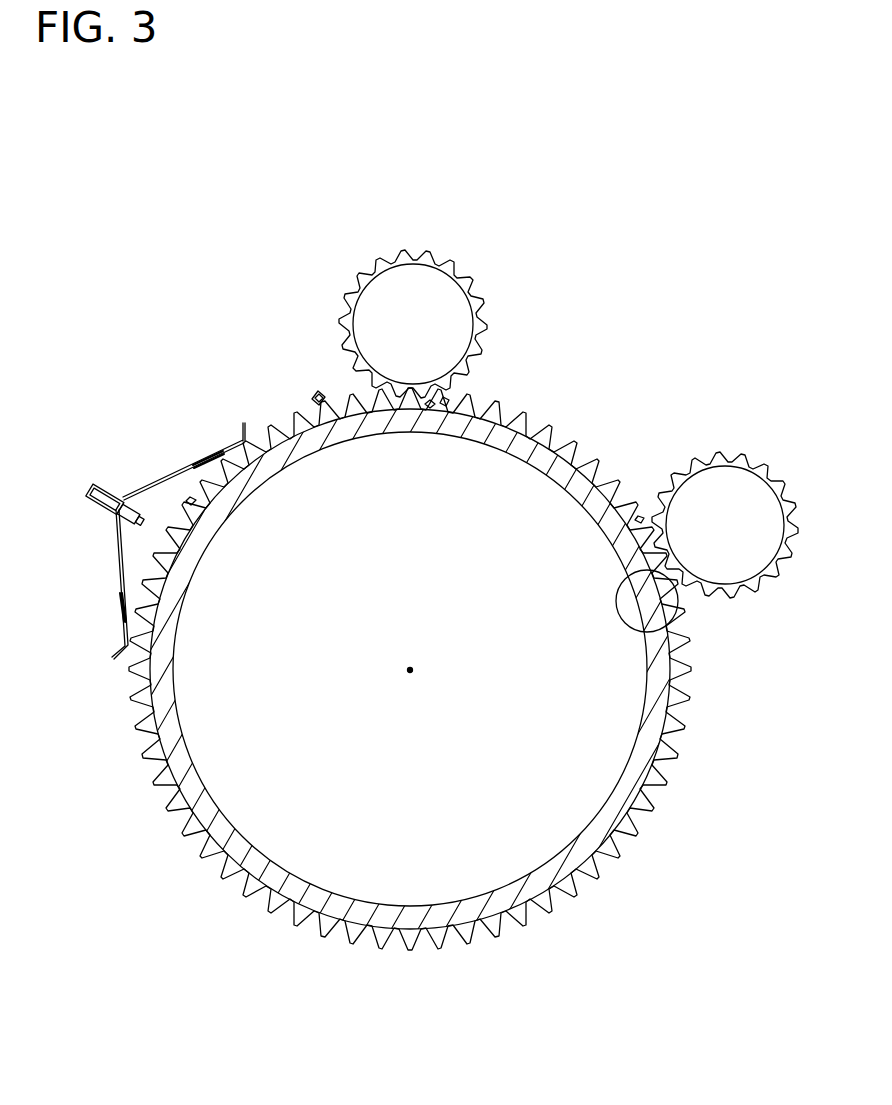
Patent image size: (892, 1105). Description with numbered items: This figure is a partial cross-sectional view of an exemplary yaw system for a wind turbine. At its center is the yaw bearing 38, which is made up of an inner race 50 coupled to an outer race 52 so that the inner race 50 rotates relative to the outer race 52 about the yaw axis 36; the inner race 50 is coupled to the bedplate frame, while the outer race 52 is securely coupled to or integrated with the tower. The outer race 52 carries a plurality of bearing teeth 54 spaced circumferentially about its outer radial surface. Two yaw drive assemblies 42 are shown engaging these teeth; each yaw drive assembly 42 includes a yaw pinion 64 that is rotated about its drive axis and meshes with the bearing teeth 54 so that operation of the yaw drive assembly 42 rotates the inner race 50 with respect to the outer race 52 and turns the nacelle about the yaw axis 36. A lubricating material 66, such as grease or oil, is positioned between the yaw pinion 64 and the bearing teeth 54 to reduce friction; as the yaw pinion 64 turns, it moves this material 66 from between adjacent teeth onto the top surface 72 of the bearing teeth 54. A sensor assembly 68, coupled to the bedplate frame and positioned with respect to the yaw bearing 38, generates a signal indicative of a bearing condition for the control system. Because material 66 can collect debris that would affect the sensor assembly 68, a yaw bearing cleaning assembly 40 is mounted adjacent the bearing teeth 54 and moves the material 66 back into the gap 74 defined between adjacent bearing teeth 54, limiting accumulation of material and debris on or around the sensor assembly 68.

The yaw axis 36 is at (410, 670).
The yaw bearing 38 is at (633, 375).
The yaw bearing cleaning assembly 40 is at (112, 446).
The yaw drive assembly 42 is at (425, 223).
The inner race 50 is at (668, 628).
The outer race 52 is at (620, 502).
The bearing teeth 54 is at (688, 686).
The yaw pinion 64 is at (447, 277).
The lubricating material 66 is at (319, 394).
The sensor assembly 68 is at (86, 583).
The top surface 72 is at (318, 396).
The gap 74 is at (283, 402).